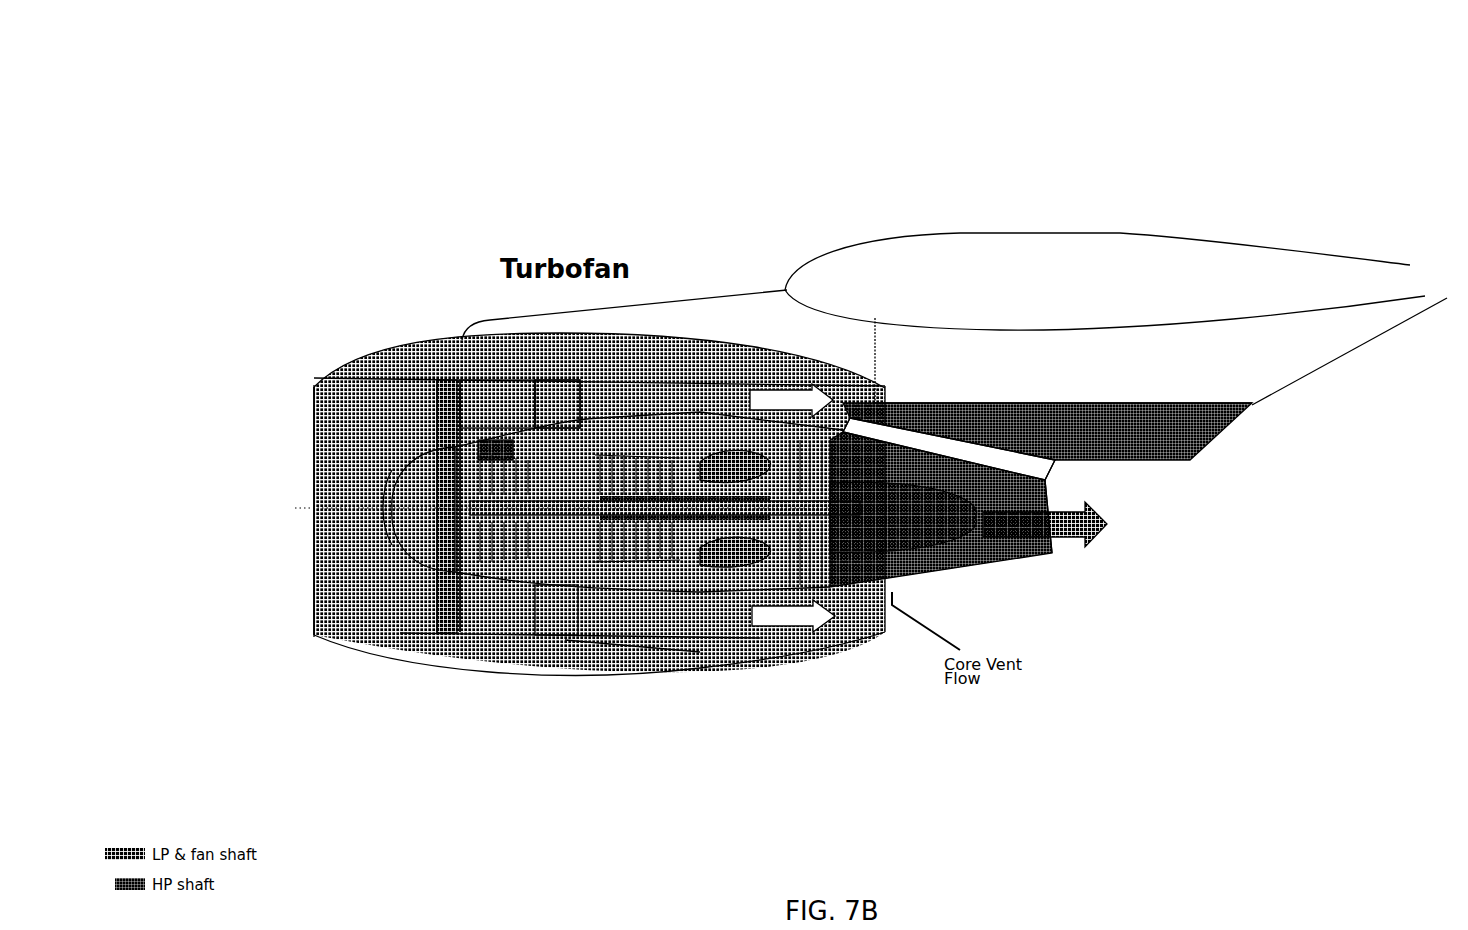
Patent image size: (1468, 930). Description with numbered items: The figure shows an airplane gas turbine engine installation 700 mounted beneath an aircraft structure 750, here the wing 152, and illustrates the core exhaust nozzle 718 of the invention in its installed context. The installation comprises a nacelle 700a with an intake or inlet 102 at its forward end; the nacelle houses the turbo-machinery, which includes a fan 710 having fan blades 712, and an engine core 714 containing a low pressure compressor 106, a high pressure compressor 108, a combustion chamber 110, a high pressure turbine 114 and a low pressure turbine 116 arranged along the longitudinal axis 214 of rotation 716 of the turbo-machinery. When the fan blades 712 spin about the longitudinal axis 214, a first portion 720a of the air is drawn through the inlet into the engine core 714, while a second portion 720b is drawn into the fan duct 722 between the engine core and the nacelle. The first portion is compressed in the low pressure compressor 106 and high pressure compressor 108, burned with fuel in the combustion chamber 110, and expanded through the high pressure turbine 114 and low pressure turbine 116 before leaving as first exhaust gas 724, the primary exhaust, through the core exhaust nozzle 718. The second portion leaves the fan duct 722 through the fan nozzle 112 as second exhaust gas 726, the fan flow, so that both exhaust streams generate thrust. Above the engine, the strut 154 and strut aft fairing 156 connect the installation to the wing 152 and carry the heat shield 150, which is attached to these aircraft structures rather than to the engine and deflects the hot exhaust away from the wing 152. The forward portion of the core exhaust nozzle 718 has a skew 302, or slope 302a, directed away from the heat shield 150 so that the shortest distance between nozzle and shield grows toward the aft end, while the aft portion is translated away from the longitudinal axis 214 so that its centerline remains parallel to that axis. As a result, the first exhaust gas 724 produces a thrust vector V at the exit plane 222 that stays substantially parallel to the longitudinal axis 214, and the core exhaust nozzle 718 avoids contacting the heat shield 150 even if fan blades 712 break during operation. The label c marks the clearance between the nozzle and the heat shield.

The airplane gas turbine engine installation 700 is at (1228, 197).
The aircraft structure 750 is at (1388, 188).
The nacelle 700a is at (546, 573).
The fan 710 is at (307, 539).
The intake or inlet 102 is at (333, 568).
The low pressure compressor 106 is at (420, 640).
The high pressure compressor 108 is at (564, 645).
The combustion chamber 110 is at (676, 641).
The fan nozzle 112 is at (667, 625).
The high pressure turbine 114 is at (845, 638).
The low pressure turbine 116 is at (910, 639).
The core exhaust nozzle 718 is at (966, 637).
The first exhaust gas (primary exhaust) 724 is at (1060, 537).
The exit plane 222 is at (1053, 540).
The second exhaust gas (fan flow) 726 is at (817, 398).
The fan duct 722 is at (572, 510).
The first portion of air 720a is at (494, 440).
The second portion of air 720b is at (633, 404).
The engine core 714 is at (474, 410).
The fan blades 712 is at (446, 420).
The longitudinal axis 214 is at (312, 502).
The rotation 716 is at (354, 503).
The strut 154 is at (668, 346).
The wing 152 is at (1105, 281).
The heat shield 150 is at (1047, 431).
The skew 302 is at (921, 434).
The slope 302a is at (949, 413).
The strut aft fairing 156 is at (1063, 383).
The thrust vector V is at (1090, 523).
The clearance c is at (1055, 462).